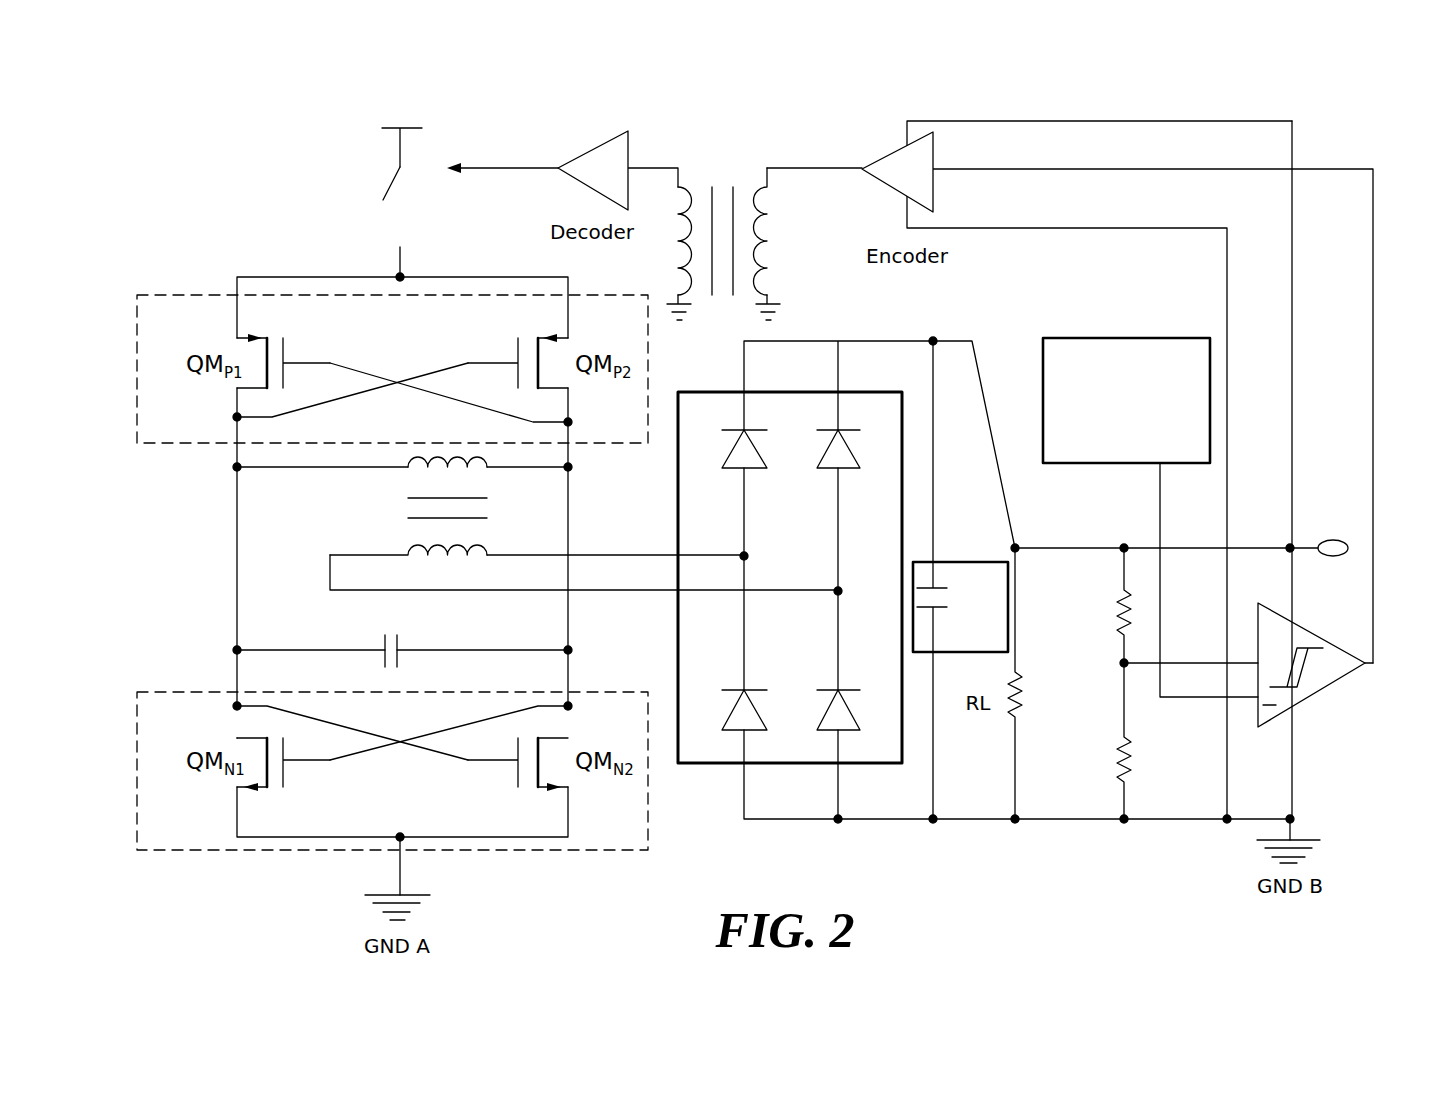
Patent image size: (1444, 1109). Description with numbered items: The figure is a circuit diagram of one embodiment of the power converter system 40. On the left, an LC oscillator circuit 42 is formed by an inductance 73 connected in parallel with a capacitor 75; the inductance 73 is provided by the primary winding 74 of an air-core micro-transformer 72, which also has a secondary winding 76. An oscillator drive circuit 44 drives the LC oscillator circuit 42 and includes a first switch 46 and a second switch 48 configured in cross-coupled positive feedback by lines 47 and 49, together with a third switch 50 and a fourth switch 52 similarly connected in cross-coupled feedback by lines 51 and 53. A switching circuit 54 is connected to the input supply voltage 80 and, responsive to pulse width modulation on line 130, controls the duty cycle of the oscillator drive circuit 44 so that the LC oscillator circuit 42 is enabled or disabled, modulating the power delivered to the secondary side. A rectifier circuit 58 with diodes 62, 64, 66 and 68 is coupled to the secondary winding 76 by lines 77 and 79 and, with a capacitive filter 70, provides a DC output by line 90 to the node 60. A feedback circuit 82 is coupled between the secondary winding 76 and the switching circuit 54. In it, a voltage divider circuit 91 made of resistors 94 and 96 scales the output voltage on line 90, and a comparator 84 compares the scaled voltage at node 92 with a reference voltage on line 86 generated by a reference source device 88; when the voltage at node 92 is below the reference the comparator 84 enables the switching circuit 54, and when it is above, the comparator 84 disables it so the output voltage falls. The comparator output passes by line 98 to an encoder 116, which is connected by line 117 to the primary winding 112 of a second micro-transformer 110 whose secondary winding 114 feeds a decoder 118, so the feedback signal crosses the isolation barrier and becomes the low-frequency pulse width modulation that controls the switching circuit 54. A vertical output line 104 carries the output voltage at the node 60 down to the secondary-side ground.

The power converter system 40 is at (205, 118).
The LC oscillator circuit 42 is at (184, 556).
The oscillator drive circuit 44 is at (190, 294).
The switch 46 is at (284, 350).
The line 47 is at (318, 406).
The switch 48 is at (517, 350).
The line 49 is at (478, 405).
The switch 50 is at (284, 778).
The line 51 is at (358, 758).
The switch 52 is at (517, 778).
The line 53 is at (440, 758).
The switching circuit 54 is at (375, 187).
The rectifier circuit 58 is at (700, 764).
The node 60 is at (1292, 542).
The diode 62 is at (756, 470).
The diode 64 is at (848, 470).
The diode 66 is at (758, 716).
The diode 68 is at (852, 716).
The capacitive filter 70 is at (972, 562).
The micro-transformer 72 is at (356, 510).
The inductance 73 is at (401, 479).
The primary winding 74 is at (488, 473).
The capacitor 75 is at (398, 641).
The secondary winding 76 is at (408, 550).
The line 77 is at (620, 554).
The line 79 is at (618, 592).
The Vdd 80 is at (422, 128).
The feedback circuit 82 is at (1395, 279).
The comparator 84 is at (1300, 707).
The line 86 is at (1160, 498).
The reference source device 88 is at (1120, 338).
The line 90 is at (1063, 546).
The voltage divider circuit 91 is at (1108, 653).
The node 92 is at (1122, 667).
The resistor 94 is at (1122, 590).
The resistor 96 is at (1132, 742).
The line 98 is at (1342, 169).
The output voltage line 104 is at (1290, 587).
The second micro-transformer 110 is at (723, 122).
The primary winding 112 is at (767, 223).
The secondary winding 114 is at (680, 250).
The encoder 116 is at (885, 153).
The line 117 is at (822, 167).
The decoder 118 is at (620, 130).
The line 130 is at (517, 165).